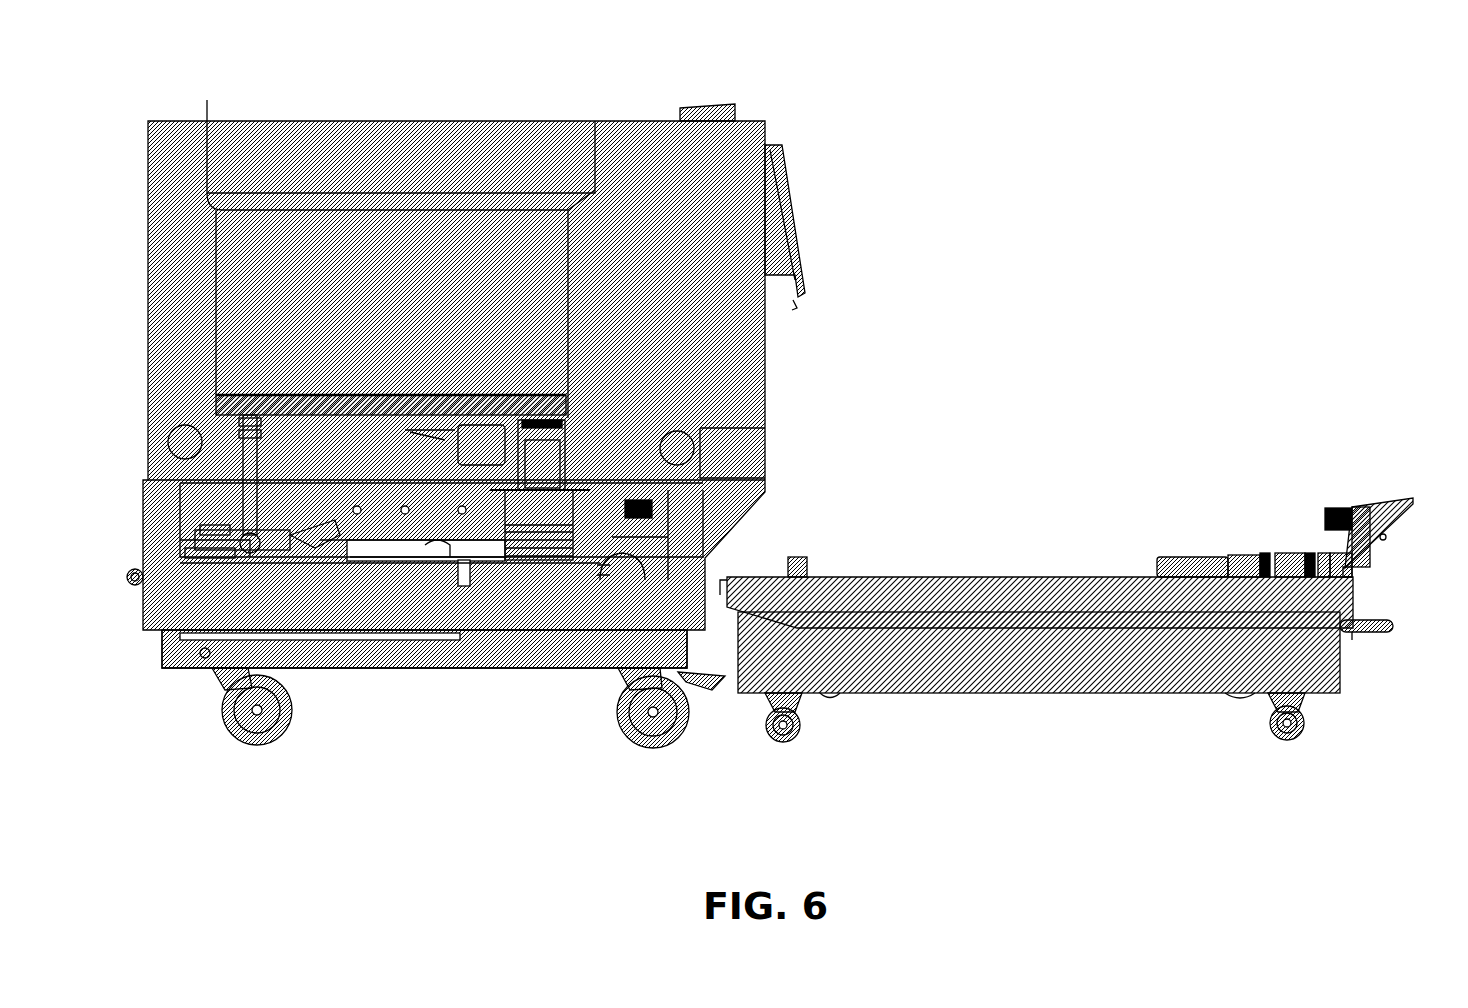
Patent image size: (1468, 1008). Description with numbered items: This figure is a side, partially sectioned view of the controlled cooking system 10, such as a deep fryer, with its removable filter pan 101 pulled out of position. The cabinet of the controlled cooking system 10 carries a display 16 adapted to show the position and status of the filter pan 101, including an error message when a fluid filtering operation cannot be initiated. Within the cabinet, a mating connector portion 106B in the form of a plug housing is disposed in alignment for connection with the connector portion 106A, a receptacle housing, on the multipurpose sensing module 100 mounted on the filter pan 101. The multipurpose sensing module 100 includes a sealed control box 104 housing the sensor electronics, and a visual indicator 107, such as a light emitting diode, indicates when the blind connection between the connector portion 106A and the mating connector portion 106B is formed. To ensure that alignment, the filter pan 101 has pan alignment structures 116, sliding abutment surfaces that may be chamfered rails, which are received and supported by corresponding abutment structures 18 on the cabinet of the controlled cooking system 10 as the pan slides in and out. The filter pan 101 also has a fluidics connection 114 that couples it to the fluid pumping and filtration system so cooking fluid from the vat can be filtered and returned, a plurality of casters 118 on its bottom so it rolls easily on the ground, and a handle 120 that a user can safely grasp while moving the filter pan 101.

The controlled cooking system 10 is at (443, 99).
The display 16 is at (795, 235).
The abutment structures 18 is at (232, 628).
The multipurpose sensing module 100 is at (1353, 505).
The filter pan 101 is at (1035, 690).
The sealed control box 104 is at (1368, 507).
The connector portion 106A is at (1327, 517).
The mating connector portion 106B is at (652, 500).
The visual indicator 107 is at (1383, 538).
The fluidics connection 114 is at (1163, 560).
The pan alignment structures 116 is at (828, 590).
The casters 118 is at (780, 738).
The handle 120 is at (1378, 630).